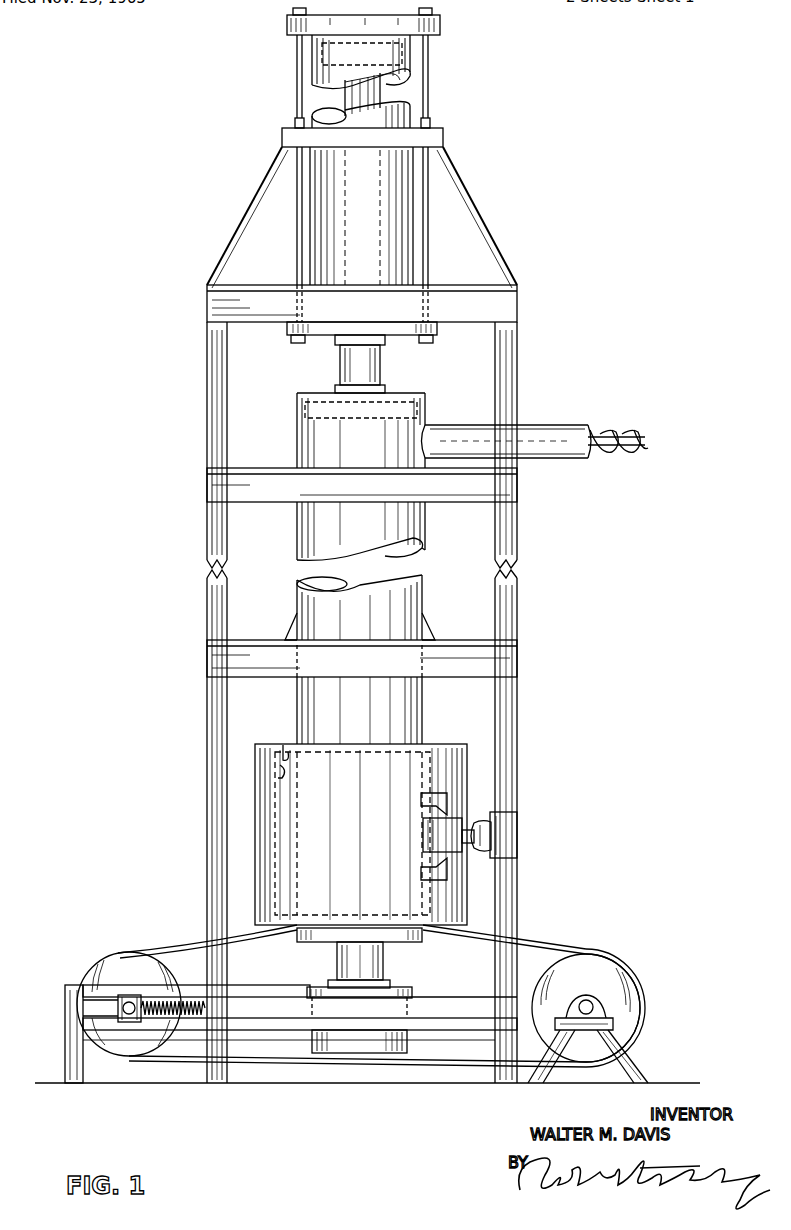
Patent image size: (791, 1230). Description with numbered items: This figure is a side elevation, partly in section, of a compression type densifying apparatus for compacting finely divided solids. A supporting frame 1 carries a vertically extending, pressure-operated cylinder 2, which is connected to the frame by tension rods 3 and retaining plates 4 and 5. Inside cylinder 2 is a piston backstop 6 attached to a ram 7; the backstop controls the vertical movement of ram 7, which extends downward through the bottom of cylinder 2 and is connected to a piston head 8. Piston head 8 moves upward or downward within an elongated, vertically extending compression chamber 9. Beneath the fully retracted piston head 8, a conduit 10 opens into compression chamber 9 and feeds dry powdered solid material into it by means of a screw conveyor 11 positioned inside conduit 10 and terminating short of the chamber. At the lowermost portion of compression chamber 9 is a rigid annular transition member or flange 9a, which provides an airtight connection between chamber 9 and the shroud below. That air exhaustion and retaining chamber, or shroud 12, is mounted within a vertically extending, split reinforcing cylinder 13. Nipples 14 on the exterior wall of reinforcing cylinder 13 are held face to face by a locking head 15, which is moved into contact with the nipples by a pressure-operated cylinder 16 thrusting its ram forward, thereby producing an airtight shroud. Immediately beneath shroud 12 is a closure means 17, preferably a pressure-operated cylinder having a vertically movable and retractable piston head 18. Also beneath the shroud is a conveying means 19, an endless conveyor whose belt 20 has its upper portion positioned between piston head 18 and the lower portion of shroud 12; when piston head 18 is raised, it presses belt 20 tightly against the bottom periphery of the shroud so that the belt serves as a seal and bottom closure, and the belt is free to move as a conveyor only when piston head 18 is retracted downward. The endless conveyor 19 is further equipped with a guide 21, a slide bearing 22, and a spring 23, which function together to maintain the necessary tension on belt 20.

The supporting frame 1 is at (517, 302).
The cylinder 2 is at (413, 192).
The tension rods 3 is at (430, 122).
The retaining plate 4 is at (440, 27).
The retaining plate 5 is at (437, 331).
The piston backstop 6 is at (395, 82).
The ram 7 is at (380, 368).
The piston head 8 is at (405, 396).
The compression chamber 9 is at (422, 540).
The flange 9a is at (283, 745).
The conduit 10 is at (575, 422).
The screw conveyor 11 is at (622, 428).
The shroud 12 is at (280, 767).
The reinforcing cylinder 13 is at (255, 852).
The nipples 14 is at (447, 802).
The locking head 15 is at (462, 820).
The pressure-operated cylinder 16 is at (482, 828).
The closure means 17 is at (407, 1046).
The piston head 18 is at (420, 942).
The conveying means 19 is at (115, 968).
The belt 20 is at (178, 945).
The guide 21 is at (85, 1005).
The slide bearing 22 is at (130, 1014).
The spring 23 is at (182, 1015).